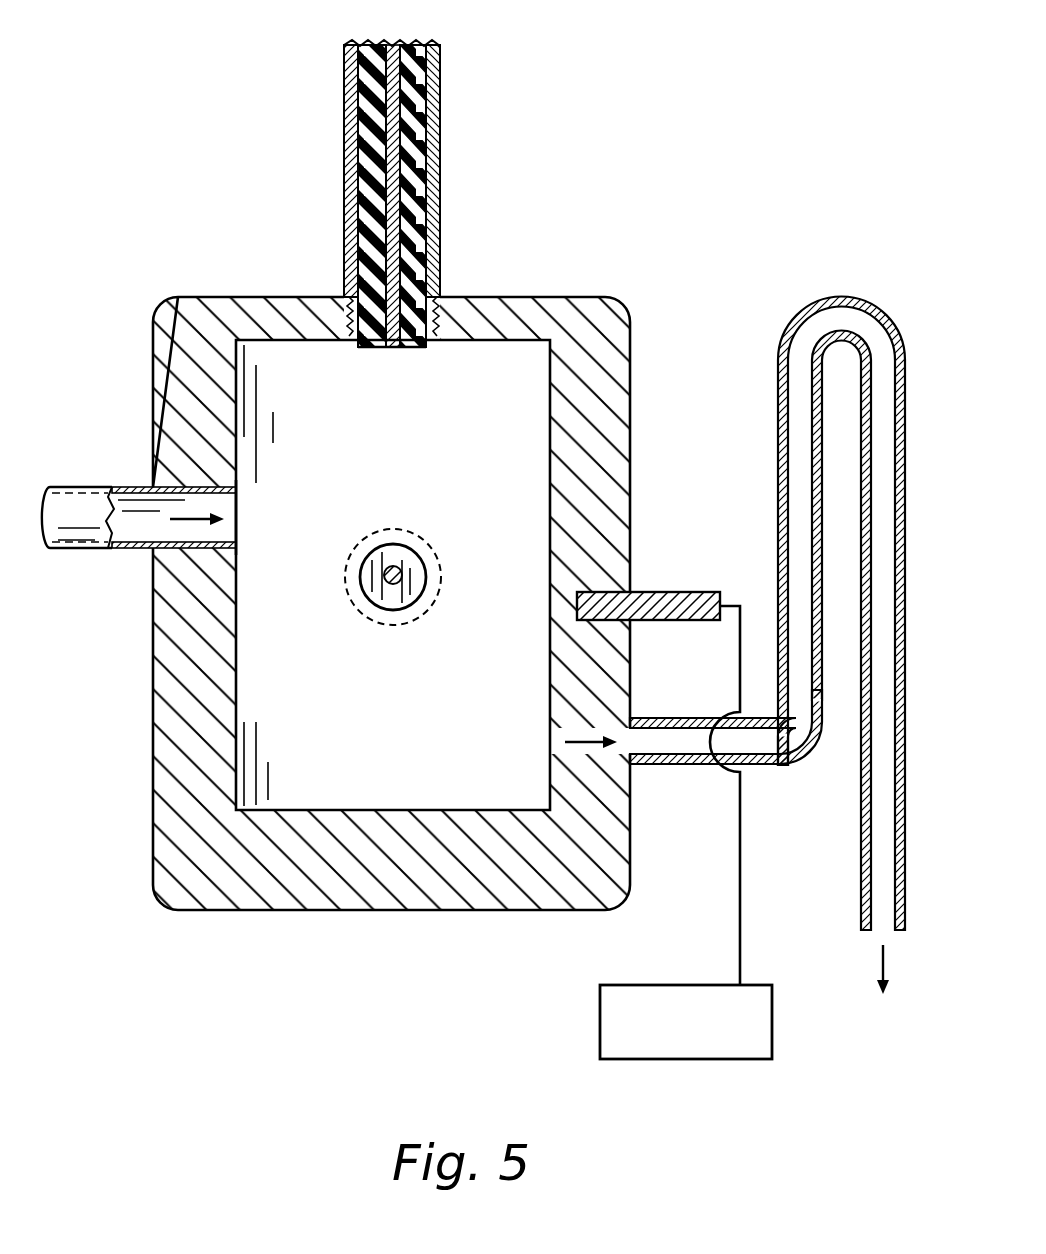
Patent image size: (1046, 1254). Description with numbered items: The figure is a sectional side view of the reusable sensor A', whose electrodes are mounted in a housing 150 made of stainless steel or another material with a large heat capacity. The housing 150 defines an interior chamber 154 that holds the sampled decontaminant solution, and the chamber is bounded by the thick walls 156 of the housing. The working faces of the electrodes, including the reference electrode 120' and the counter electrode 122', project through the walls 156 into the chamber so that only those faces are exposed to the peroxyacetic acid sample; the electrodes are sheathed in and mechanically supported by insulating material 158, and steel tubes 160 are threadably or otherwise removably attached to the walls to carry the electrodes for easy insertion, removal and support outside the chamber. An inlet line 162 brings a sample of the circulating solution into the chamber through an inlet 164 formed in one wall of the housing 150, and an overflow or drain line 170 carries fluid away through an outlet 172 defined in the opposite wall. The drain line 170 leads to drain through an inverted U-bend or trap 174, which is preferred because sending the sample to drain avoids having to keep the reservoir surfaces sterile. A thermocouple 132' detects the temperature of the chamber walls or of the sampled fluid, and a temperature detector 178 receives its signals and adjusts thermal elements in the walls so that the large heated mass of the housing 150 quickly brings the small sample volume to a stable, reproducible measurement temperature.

The housing 150 is at (258, 297).
The chamber 154 is at (336, 395).
The walls 156 is at (183, 442).
The insulating material 158 is at (451, 193).
The steel tubes 160 is at (438, 256).
The reference electrode 120' is at (410, 381).
The counter electrode 122' is at (423, 554).
The thermocouple 132' is at (656, 576).
The inlet line 162 is at (78, 545).
The inlet 164 is at (237, 528).
The overflow or drain line 170 is at (675, 742).
The outlet 172 is at (552, 745).
The inverted U-bend or trap 174 is at (779, 346).
The temperature detector 178 is at (600, 1020).
The sensor A' is at (185, 72).